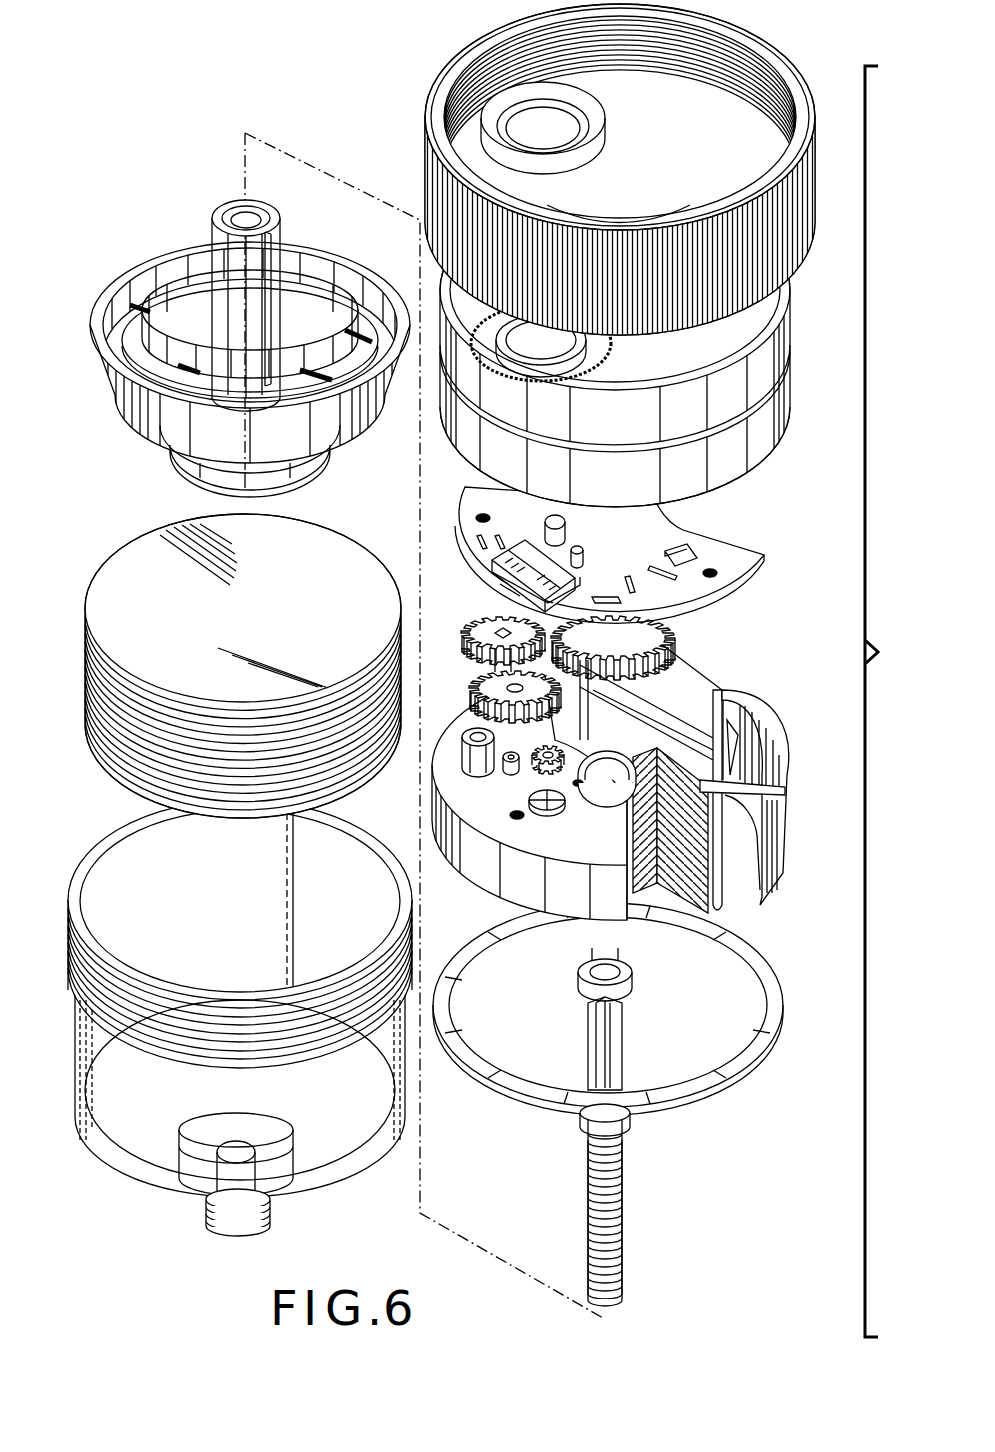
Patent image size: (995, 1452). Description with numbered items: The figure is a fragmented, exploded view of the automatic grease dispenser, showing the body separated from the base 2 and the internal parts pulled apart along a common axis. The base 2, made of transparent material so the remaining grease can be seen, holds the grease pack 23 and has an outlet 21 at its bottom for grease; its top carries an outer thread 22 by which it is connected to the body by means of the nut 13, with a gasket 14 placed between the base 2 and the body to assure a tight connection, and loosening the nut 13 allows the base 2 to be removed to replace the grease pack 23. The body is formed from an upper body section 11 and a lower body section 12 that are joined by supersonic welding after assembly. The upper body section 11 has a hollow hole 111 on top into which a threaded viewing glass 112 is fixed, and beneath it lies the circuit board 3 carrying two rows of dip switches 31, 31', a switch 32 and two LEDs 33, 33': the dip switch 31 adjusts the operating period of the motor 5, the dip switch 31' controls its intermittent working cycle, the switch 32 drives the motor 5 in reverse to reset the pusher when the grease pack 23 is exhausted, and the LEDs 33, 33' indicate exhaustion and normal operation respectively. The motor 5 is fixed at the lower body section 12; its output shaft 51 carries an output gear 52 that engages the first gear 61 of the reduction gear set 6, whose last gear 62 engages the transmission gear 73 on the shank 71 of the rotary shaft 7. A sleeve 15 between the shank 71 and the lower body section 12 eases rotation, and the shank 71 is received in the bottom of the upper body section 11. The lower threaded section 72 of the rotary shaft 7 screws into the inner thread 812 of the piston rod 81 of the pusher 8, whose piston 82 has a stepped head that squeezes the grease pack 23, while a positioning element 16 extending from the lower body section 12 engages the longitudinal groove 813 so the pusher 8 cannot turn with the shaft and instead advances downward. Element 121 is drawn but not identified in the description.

The base 2 is at (386, 834).
The outlet 21 is at (210, 1226).
The outer thread 22 is at (160, 928).
The grease pack 23 is at (90, 612).
The circuit board 3 is at (765, 550).
The dip switch 31 is at (502, 576).
The dip switch 31' is at (477, 594).
The switch 32 is at (562, 538).
The LED 33 is at (511, 508).
The LED 33' is at (605, 546).
The motor 5 is at (545, 940).
The output shaft 51 is at (519, 815).
The output gear 52 is at (575, 725).
The reduction gear set 6 is at (492, 622).
The first gear 61 is at (478, 688).
The last gear 62 is at (574, 583).
The rotary shaft 7 is at (626, 1128).
The shank 71 is at (590, 1065).
The threaded section 72 is at (590, 1232).
The transmission gear 73 is at (676, 640).
The pusher 8 is at (156, 249).
The piston rod 81 is at (242, 202).
The inner thread 812 is at (280, 199).
The longitudinal groove 813 is at (278, 244).
The piston 82 is at (367, 422).
The upper body section 11 is at (790, 411).
The hollow hole 111 is at (586, 352).
The viewing glass 112 is at (600, 142).
The lower body section 12 is at (772, 748).
The clip 121 is at (607, 742).
The nut 13 is at (815, 215).
The gasket 14 is at (775, 1000).
The sleeve 15 is at (632, 972).
The positioning element 16 is at (640, 825).